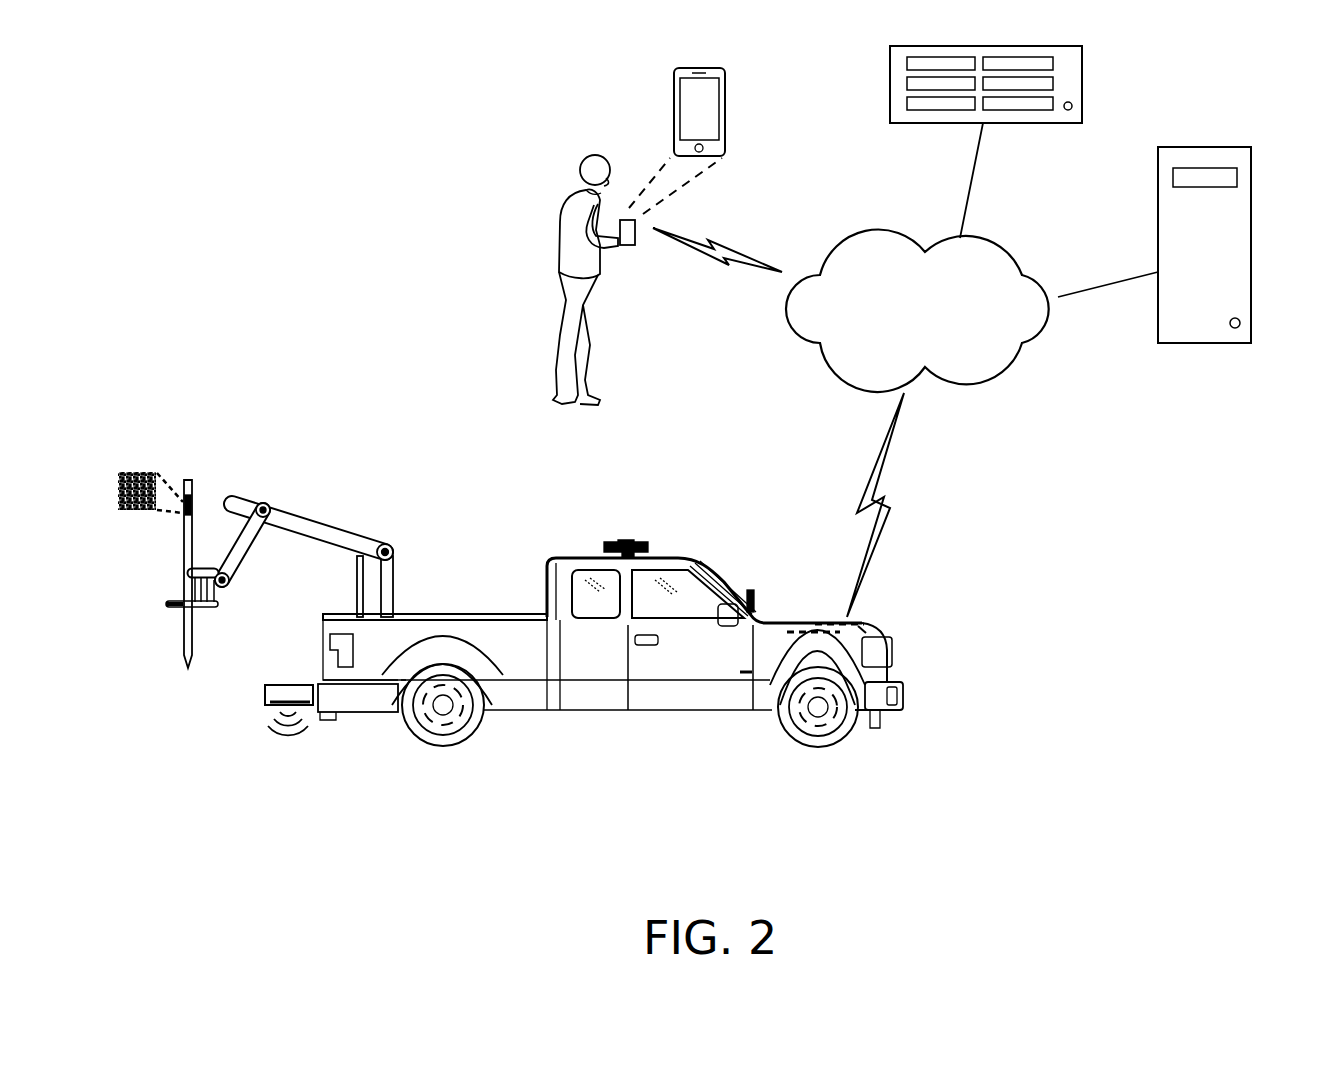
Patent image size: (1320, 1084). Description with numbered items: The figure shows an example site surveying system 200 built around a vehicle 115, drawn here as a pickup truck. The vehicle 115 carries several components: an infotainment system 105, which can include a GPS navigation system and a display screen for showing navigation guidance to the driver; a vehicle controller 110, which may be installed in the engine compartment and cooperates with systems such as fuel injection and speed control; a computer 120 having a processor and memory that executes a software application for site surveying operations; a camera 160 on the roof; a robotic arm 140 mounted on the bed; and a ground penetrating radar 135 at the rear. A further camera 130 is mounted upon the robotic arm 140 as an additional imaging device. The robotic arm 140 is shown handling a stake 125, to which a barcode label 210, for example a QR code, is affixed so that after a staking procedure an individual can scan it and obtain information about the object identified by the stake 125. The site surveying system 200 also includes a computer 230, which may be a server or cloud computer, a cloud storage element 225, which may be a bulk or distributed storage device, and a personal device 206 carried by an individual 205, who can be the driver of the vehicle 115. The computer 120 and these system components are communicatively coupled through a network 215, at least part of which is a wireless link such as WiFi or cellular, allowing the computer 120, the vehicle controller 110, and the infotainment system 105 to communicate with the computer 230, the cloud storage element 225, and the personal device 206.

The infotainment system 105 is at (750, 588).
The vehicle controller 110 is at (810, 622).
The vehicle 115 is at (436, 449).
The computer 120 is at (862, 630).
The stake 125 is at (183, 560).
The camera 130 is at (236, 596).
The ground penetrating radar 135 is at (290, 684).
The robotic arm 140 is at (384, 531).
The camera 160 is at (641, 539).
The site surveying system 200 is at (1204, 735).
The individual 205 is at (530, 202).
The personal device 206 is at (672, 118).
The barcode label 210 is at (149, 463).
The network 215 is at (1003, 284).
The cloud storage element 225 is at (921, 139).
The computer 230 is at (1181, 371).